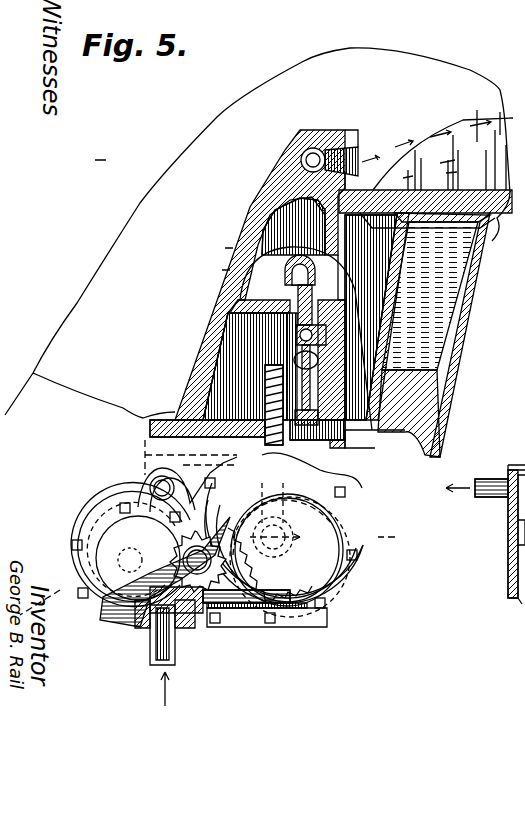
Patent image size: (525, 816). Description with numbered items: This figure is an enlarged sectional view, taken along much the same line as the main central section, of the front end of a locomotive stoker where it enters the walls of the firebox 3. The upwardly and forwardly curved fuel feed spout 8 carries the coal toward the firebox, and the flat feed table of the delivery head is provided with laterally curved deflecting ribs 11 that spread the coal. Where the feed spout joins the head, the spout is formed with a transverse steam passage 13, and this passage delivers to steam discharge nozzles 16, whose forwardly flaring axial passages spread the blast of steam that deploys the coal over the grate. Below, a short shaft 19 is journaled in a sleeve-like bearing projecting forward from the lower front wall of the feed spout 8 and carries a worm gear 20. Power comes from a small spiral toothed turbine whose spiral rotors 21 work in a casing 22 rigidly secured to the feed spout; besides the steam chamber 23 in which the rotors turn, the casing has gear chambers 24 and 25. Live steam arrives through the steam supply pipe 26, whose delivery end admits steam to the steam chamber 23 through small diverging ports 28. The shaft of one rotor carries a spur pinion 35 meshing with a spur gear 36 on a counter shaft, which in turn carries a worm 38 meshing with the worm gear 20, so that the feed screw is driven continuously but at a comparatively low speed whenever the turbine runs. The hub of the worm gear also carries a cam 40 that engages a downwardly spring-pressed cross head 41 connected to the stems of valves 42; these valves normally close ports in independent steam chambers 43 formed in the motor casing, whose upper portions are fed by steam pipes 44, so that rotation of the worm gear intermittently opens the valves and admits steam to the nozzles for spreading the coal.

The walls of the firebox 3 is at (456, 327).
The fuel feed spout 8 is at (271, 161).
The deflecting ribs 11 is at (478, 140).
The transverse steam passage 13 is at (313, 148).
The steam discharge nozzles 16 is at (360, 158).
The short shaft 19 is at (174, 410).
The worm gear 20 is at (280, 483).
The spiral rotors 21 is at (160, 563).
The casing 22 is at (150, 628).
The steam chamber 23 is at (183, 622).
The gear chamber 24 is at (302, 604).
The gear chamber 25 is at (355, 478).
The steam supply pipe 26 is at (155, 658).
The diverging ports 28 is at (180, 640).
The spur pinion 35 is at (214, 580).
The spur gear 36 is at (267, 567).
The worm 38 is at (395, 537).
The cam 40 is at (369, 443).
The cross head 41 is at (348, 436).
The valves 42 is at (292, 356).
The steam chambers 43 is at (215, 327).
The steam pipes 44 is at (255, 244).